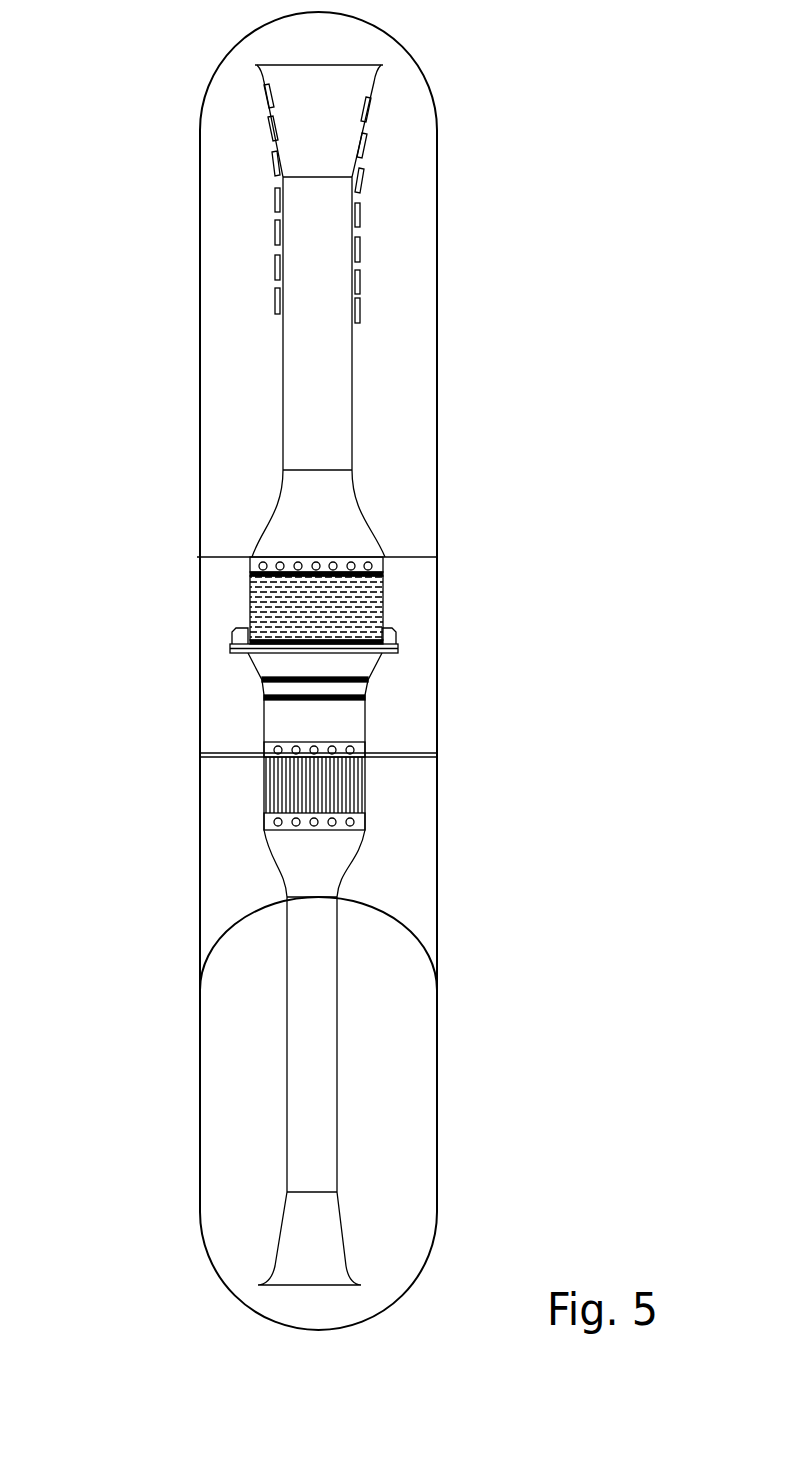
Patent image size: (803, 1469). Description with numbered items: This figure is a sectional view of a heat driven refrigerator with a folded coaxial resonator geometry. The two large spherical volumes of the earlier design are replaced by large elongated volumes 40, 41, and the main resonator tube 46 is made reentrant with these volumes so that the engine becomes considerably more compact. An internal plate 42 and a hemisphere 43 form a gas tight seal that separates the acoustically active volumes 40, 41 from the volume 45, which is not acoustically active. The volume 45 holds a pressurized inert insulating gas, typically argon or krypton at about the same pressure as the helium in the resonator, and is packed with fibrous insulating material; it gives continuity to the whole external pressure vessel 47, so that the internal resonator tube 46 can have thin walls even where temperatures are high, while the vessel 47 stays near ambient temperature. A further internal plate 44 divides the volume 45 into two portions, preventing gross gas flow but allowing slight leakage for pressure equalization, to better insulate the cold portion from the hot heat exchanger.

The elongated volume 40 is at (410, 243).
The elongated volume 41 is at (400, 1100).
The internal plate 42 is at (413, 557).
The hemisphere 43 is at (398, 932).
The internal plate 44 is at (400, 754).
The volume 45 is at (217, 722).
The main resonator tube 46 is at (280, 370).
The external pressure vessel 47 is at (197, 464).